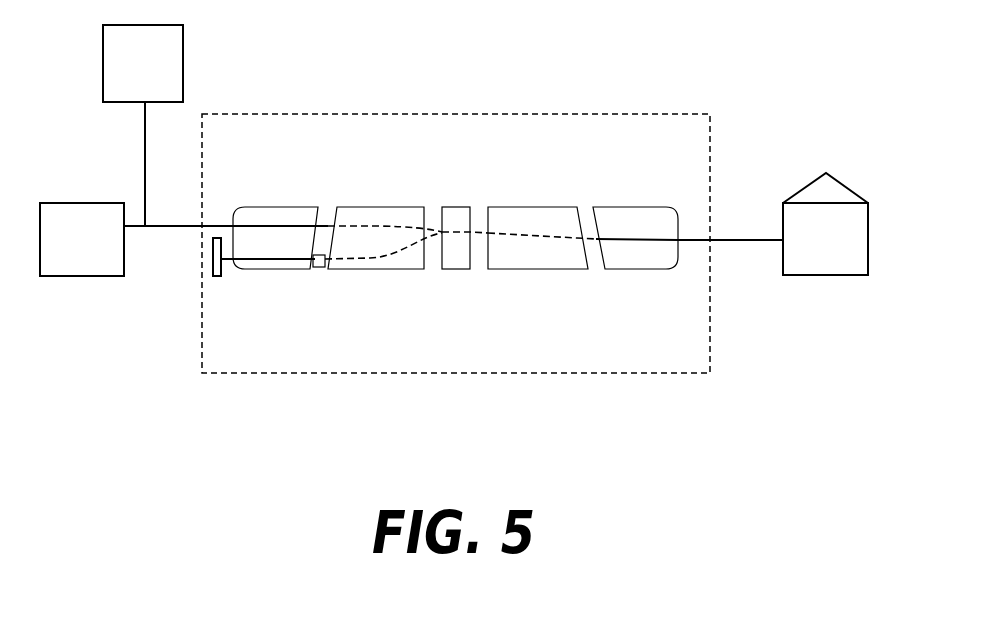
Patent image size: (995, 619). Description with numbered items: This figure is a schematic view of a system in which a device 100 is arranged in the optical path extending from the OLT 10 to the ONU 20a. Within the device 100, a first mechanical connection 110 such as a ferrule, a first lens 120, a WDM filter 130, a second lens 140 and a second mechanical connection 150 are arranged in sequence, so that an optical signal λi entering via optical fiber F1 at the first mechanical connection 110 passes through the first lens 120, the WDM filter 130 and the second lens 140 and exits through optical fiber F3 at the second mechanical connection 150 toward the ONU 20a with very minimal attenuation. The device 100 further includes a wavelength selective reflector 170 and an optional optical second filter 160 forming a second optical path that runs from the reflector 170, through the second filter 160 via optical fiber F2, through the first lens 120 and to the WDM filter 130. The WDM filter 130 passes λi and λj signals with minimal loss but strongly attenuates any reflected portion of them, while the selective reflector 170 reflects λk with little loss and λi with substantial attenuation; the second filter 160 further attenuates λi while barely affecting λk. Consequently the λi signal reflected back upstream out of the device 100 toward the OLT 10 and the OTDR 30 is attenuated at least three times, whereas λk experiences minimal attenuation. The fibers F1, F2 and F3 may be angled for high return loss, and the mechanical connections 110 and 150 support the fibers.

The OLT 10 is at (97, 255).
The OTDR 30 is at (157, 78).
The ONU 20a is at (847, 255).
The device 100 is at (316, 88).
The first mechanical connection 110 is at (280, 220).
The first lens 120 is at (377, 222).
The WDM filter 130 is at (457, 220).
The second lens 140 is at (552, 223).
The second mechanical connection 150 is at (657, 222).
The optical second filter 160 is at (318, 265).
The wavelength selective reflector 170 is at (217, 273).
The optical fiber F1 is at (222, 226).
The optical fiber F2 is at (260, 259).
The optical fiber F3 is at (695, 240).